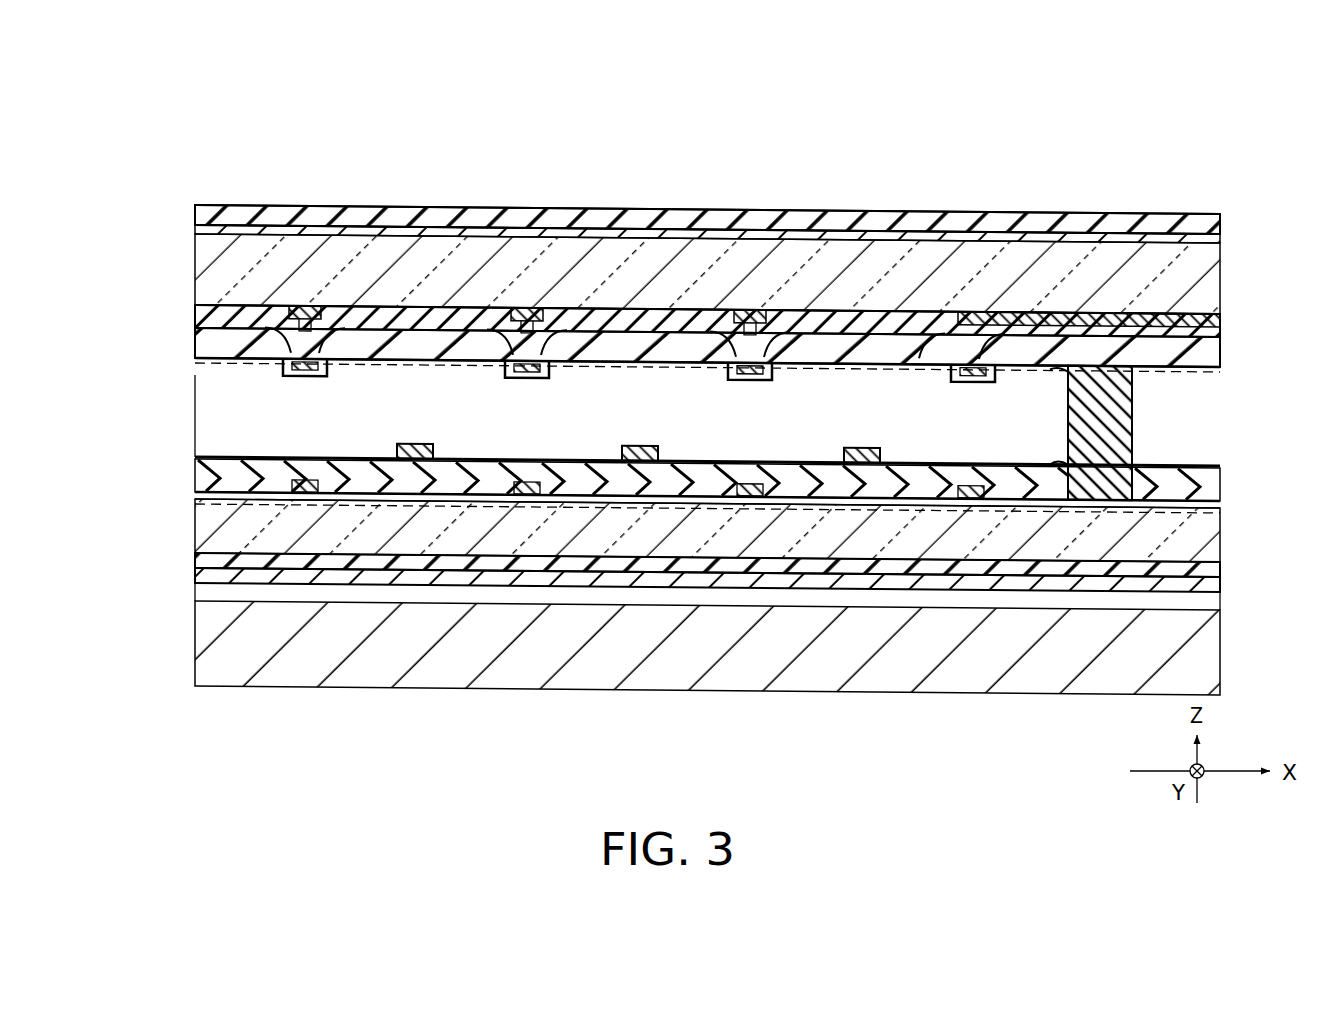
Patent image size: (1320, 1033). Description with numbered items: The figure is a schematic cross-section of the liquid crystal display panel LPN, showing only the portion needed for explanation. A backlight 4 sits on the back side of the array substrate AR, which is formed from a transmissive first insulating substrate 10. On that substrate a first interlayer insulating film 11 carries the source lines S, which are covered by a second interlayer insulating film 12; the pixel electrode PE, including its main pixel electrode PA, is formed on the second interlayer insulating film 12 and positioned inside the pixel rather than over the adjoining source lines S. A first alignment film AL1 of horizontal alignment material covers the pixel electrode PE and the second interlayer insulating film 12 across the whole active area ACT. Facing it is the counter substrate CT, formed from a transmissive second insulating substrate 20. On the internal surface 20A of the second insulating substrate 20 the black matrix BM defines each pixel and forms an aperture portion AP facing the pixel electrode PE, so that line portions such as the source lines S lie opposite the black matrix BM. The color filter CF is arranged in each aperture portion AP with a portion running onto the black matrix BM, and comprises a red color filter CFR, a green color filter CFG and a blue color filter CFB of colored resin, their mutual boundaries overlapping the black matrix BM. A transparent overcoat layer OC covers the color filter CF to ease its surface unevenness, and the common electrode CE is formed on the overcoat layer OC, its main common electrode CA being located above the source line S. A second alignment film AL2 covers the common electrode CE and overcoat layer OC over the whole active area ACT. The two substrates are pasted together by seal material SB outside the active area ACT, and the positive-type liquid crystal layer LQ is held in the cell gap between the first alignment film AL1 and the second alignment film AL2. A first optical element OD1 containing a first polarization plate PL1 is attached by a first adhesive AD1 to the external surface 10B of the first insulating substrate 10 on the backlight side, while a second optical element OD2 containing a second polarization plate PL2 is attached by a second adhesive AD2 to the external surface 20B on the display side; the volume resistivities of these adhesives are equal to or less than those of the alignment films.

The active area ACT is at (975, 312).
The aperture portion AP is at (737, 312).
The external surface of the second insulating substrate 20B is at (232, 224).
The internal surface of the second insulating substrate 20A is at (222, 342).
The second insulating substrate 20 is at (1218, 270).
The counter substrate CT is at (702, 274).
The second optical element OD2 is at (662, 223).
The second polarization plate PL2 is at (195, 214).
The second adhesive AD2 is at (1192, 213).
The liquid crystal display panel LPN is at (1228, 240).
The color filter CF is at (226, 317).
The red color filter CFR is at (920, 326).
The green color filter CFG is at (425, 326).
The blue color filter CFB is at (640, 326).
The black matrix BM is at (1222, 320).
The overcoat layer OC is at (1218, 352).
The common electrode CE is at (283, 366).
The main common electrode CA is at (988, 364).
The liquid crystal layer LQ is at (195, 450).
The seal material SB is at (1125, 435).
The first alignment film AL1 is at (1133, 466).
The second alignment film AL2 is at (1132, 372).
The second interlayer insulating film 12 is at (1007, 484).
The first interlayer insulating film 11 is at (1220, 503).
The main pixel electrode PA is at (642, 589).
The pixel electrode PE is at (862, 466).
The source line S is at (971, 500).
The array substrate AR is at (701, 531).
The first insulating substrate 10 is at (1212, 548).
The external surface of the first insulating substrate 10B is at (230, 590).
The first optical element OD1 is at (661, 569).
The first polarization plate PL1 is at (234, 568).
The first adhesive AD1 is at (1215, 587).
The backlight 4 is at (200, 653).